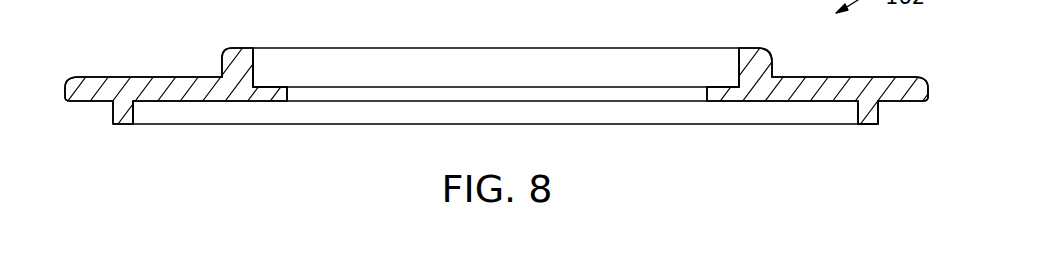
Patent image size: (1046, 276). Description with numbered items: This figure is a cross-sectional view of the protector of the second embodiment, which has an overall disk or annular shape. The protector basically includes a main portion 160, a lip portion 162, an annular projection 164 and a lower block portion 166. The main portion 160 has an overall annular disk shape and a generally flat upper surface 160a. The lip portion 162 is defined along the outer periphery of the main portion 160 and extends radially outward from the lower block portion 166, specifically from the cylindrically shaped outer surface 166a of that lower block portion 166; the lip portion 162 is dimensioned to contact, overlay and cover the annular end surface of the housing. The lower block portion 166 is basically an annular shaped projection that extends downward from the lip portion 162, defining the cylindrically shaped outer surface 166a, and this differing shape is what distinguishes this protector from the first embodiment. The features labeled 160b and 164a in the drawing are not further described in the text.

The main portion 160 is at (805, 95).
The upper surface 160a is at (128, 76).
The stepped shoulder of plate 160b is at (288, 88).
The lip portion 162 is at (907, 85).
The annular projection 164 is at (233, 63).
The inner face of rim / upper plate 164a is at (255, 67).
The lower block portion 166 is at (870, 117).
The outer surface 166a is at (880, 120).